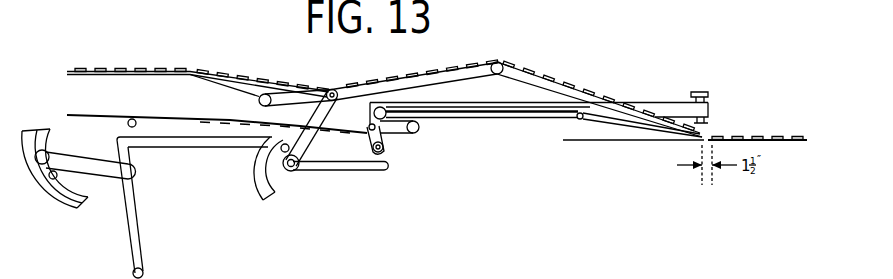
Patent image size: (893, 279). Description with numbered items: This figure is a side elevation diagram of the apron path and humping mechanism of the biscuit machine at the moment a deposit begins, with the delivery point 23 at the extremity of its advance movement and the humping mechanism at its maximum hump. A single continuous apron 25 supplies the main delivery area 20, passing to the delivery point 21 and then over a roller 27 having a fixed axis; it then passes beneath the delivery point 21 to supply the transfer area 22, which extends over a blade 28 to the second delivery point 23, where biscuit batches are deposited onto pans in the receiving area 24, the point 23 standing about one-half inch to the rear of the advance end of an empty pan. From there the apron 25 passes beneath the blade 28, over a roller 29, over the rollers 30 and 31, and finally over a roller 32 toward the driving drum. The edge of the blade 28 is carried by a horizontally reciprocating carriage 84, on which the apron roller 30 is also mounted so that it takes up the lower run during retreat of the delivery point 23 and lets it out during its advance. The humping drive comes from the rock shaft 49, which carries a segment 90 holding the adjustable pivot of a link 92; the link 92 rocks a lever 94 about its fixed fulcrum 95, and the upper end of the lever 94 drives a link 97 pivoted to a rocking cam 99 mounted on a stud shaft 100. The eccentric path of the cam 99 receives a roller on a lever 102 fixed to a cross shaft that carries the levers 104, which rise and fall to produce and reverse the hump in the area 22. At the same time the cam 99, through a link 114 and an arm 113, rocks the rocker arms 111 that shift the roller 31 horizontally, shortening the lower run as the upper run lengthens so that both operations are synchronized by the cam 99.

The main delivery area 20 is at (150, 65).
The delivery point 21 is at (307, 89).
The transfer area 22 is at (480, 62).
The second delivery point 23 is at (709, 132).
The receiving area 24 is at (767, 135).
The apron 25 is at (180, 115).
The roller 27 is at (258, 98).
The blade 28 is at (582, 97).
The roller 29 is at (578, 118).
The apron roller 30 is at (373, 112).
The roller 31 is at (419, 128).
The roller 32 is at (128, 124).
The rock shaft 49 is at (50, 178).
The carriage 84 is at (515, 118).
The segment 90 is at (35, 130).
The link 92 is at (110, 178).
The lever 94 is at (138, 220).
The fixed fulcrum 95 is at (145, 270).
The link 97 is at (185, 143).
The rocking cam 99 is at (263, 178).
The stud shaft 100 is at (297, 158).
The lever 102 is at (312, 110).
The levers 104 is at (442, 77).
The rocker arms 111 is at (369, 137).
The arm 113 is at (388, 160).
The link 114 is at (348, 171).